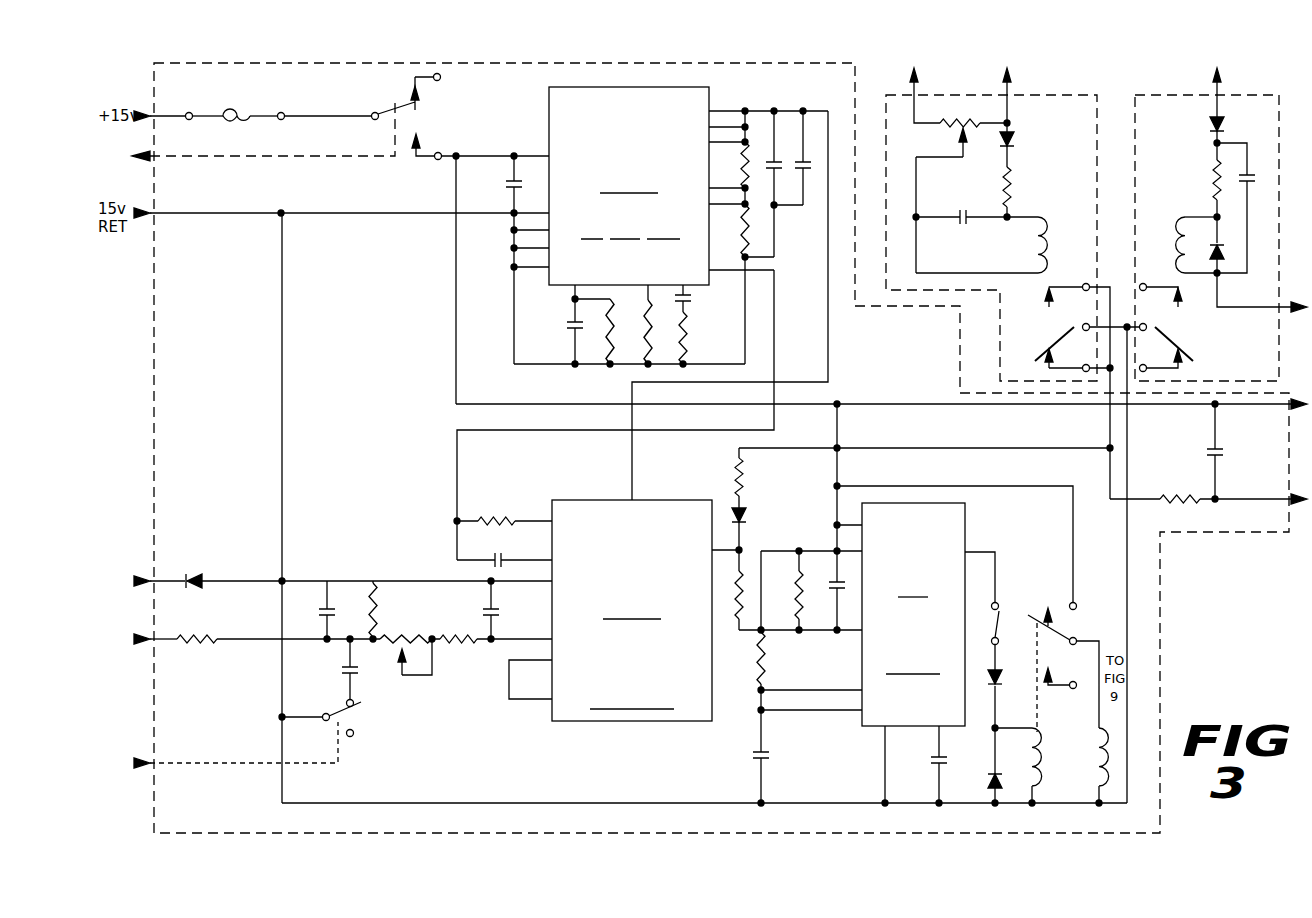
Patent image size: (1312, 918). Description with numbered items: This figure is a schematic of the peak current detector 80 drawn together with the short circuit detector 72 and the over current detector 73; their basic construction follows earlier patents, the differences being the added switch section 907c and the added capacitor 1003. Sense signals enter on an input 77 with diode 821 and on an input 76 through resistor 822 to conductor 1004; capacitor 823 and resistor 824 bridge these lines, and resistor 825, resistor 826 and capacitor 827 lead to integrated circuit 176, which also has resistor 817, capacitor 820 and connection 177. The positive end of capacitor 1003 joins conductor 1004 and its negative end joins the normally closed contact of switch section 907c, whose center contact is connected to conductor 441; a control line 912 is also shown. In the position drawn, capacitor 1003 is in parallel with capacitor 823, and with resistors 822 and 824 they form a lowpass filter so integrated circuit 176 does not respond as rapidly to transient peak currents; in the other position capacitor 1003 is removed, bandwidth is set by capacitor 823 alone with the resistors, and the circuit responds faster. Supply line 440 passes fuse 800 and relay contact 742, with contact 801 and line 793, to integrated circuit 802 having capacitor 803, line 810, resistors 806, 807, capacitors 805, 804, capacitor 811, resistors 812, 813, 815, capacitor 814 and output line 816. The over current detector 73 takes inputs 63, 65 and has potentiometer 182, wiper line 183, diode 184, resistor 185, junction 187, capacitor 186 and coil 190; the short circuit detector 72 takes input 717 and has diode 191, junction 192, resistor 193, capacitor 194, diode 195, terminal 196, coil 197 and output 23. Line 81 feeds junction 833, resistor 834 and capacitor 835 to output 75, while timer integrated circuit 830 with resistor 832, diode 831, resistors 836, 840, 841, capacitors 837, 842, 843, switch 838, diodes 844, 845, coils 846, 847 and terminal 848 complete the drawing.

The peak current detector 80 is at (154, 365).
The relay contact 742 is at (380, 107).
The +15V supply line 440 is at (158, 116).
The fuse 800 is at (231, 108).
The output line 793 is at (146, 162).
The relay contact 801 is at (434, 141).
The conductor 441 is at (206, 213).
The pulse width modulator SG3524 802 is at (546, 119).
The capacitor 803 is at (507, 184).
The supply line 810 is at (726, 111).
The resistor 806 is at (730, 165).
The resistor 807 is at (730, 230).
The capacitor 805 is at (768, 158).
The capacitor 804 is at (816, 158).
The output line 816 is at (775, 331).
The capacitor 811 is at (568, 334).
The resistor 812 is at (606, 332).
The resistor 813 is at (642, 328).
The capacitor 814 is at (693, 299).
The resistor 815 is at (688, 341).
The over current detector 73 is at (888, 164).
The input line 63 is at (918, 96).
The input line 65 is at (1010, 96).
The potentiometer 182 is at (942, 123).
The diode 184 is at (1016, 144).
The wiper line 183 is at (922, 160).
The resistor 185 is at (1012, 188).
The junction 187 is at (1020, 218).
The capacitor 186 is at (964, 225).
The relay coil 190 is at (1046, 250).
The short circuit detector 72 is at (1135, 164).
The input line 717 is at (1220, 96).
The diode 191 is at (1208, 128).
The junction 192 is at (1213, 146).
The resistor 193 is at (1210, 184).
The capacitor 194 is at (1262, 179).
The diode 195 is at (1222, 245).
The coil terminal 196 is at (1180, 215).
The relay coil 197 is at (1180, 250).
The output line 23 is at (1284, 304).
The output line 81 is at (1284, 402).
The junction 833 is at (1112, 475).
The resistor 834 is at (1189, 504).
The capacitor 835 is at (1207, 454).
The output line 75 is at (1285, 496).
The resistor 832 is at (745, 470).
The diode 831 is at (748, 518).
The resistor 836 is at (734, 612).
The resistor 840 is at (793, 599).
The capacitor 837 is at (830, 596).
The resistor 841 is at (769, 669).
The capacitor 842 is at (770, 758).
The 555 timer 830 is at (967, 524).
The capacitor 843 is at (930, 766).
The switch 838 is at (1002, 602).
The diode 844 is at (998, 686).
The diode 845 is at (990, 788).
The relay coil 846 is at (1035, 786).
The relay coil 847 is at (1093, 765).
The relay coil terminal 848 is at (1110, 698).
The integrated circuit 176 is at (594, 500).
The resistor 817 is at (516, 514).
The capacitor 820 is at (501, 550).
The connection 177 is at (509, 680).
The input line 77 is at (166, 578).
The diode 821 is at (202, 589).
The input line 76 is at (160, 637).
The resistor 822 is at (208, 649).
The conductor 1004 is at (270, 638).
The capacitor 823 is at (319, 609).
The resistor 824 is at (379, 609).
The potentiometer 825 is at (395, 637).
The resistor 826 is at (446, 635).
The capacitor 827 is at (500, 611).
The capacitor 1003 is at (361, 681).
The switch section 907c is at (340, 705).
The control line 912 is at (178, 763).